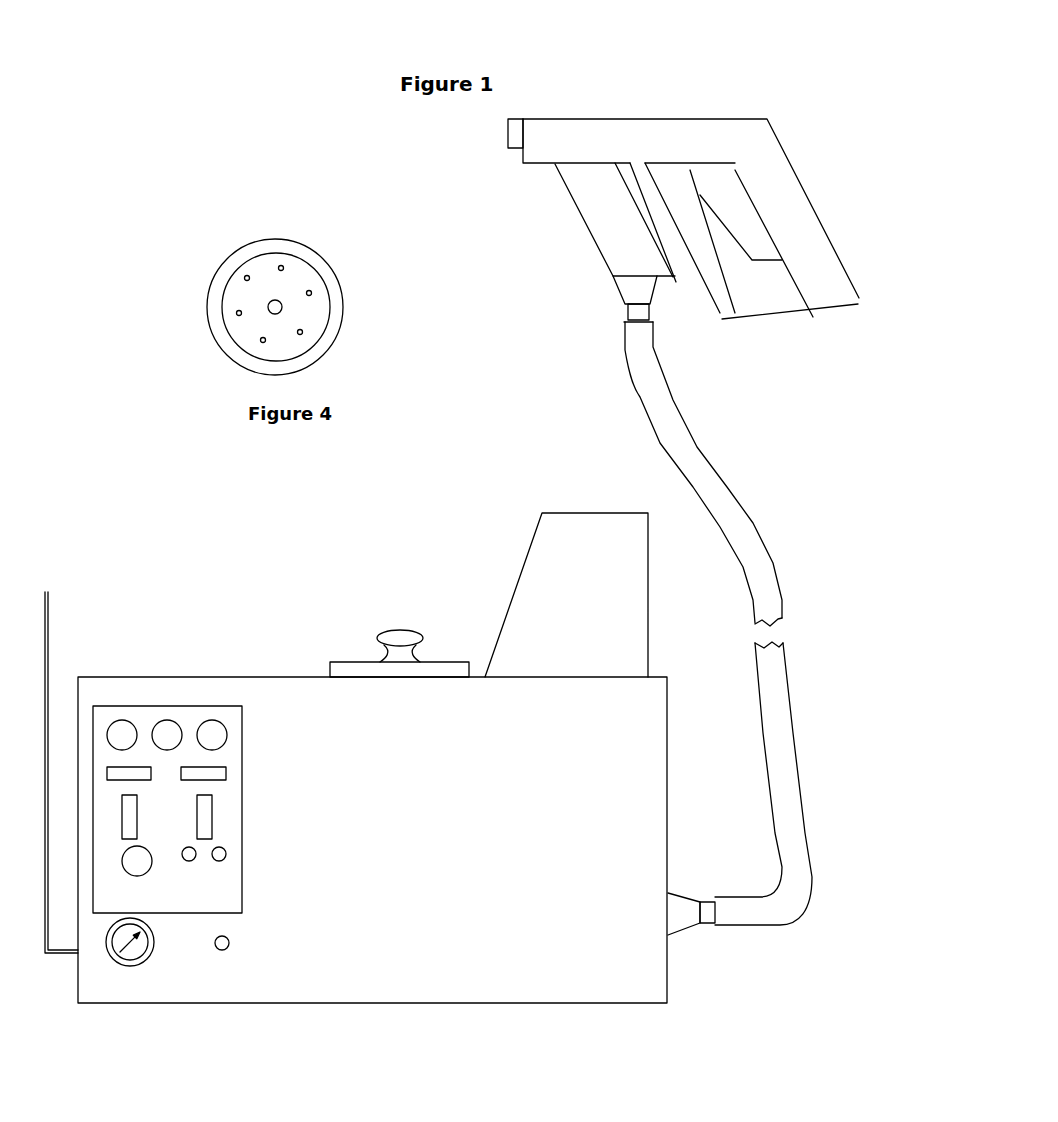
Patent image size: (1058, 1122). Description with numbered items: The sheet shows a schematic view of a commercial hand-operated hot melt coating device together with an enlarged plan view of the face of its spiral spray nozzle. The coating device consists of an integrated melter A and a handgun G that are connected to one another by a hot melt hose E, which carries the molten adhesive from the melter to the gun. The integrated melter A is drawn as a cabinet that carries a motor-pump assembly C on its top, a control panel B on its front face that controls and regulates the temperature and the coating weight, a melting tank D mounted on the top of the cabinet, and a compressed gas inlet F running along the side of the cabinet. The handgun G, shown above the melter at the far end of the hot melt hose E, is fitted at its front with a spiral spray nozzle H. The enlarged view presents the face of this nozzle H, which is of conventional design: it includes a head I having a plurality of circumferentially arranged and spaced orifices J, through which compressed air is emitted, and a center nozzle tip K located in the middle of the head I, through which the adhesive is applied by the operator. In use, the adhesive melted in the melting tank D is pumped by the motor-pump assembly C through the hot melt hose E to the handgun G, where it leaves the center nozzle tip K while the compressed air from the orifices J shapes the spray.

In FIG. 1, the integrated melter A is at (456, 881).
In FIG. 1, the control panel B is at (129, 700).
In FIG. 1, the motor-pump assembly C is at (550, 488).
In FIG. 1, the melting tank D is at (360, 643).
In FIG. 1, the hot melt hose E is at (782, 546).
In FIG. 1, the compressed gas inlet F is at (49, 579).
In FIG. 1, the handgun G is at (597, 153).
In FIG. 1, the spiral spray nozzle H is at (494, 132).
In FIG. 4, the spiral spray nozzle H is at (213, 252).
In FIG. 4, the head I is at (238, 301).
In FIG. 4, the orifices J is at (253, 260).
In FIG. 4, the center nozzle tip K is at (254, 317).